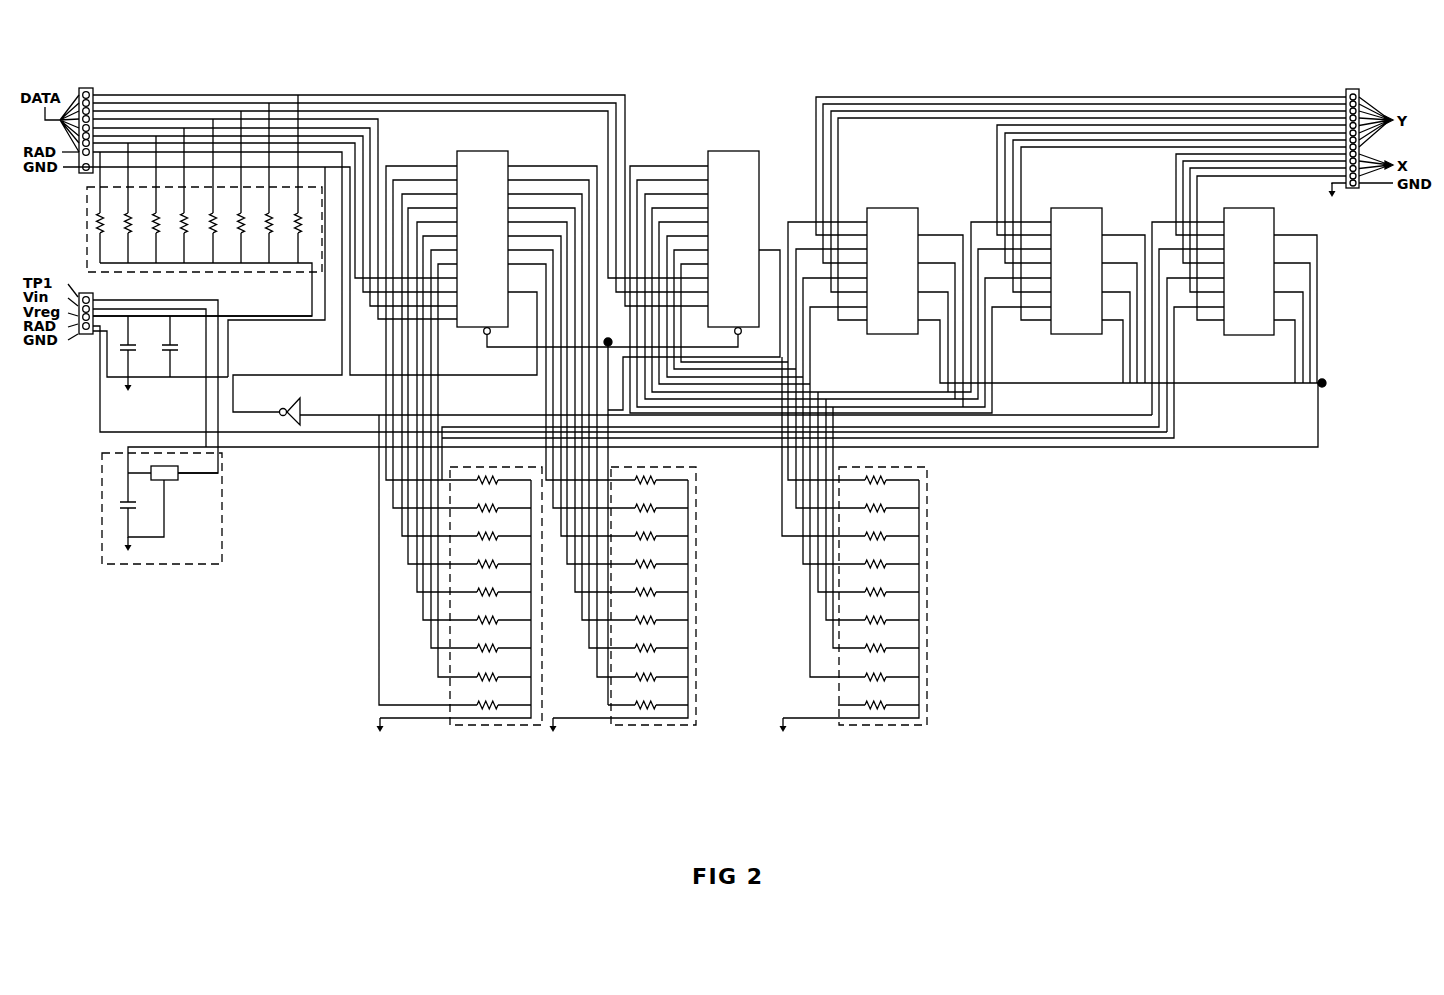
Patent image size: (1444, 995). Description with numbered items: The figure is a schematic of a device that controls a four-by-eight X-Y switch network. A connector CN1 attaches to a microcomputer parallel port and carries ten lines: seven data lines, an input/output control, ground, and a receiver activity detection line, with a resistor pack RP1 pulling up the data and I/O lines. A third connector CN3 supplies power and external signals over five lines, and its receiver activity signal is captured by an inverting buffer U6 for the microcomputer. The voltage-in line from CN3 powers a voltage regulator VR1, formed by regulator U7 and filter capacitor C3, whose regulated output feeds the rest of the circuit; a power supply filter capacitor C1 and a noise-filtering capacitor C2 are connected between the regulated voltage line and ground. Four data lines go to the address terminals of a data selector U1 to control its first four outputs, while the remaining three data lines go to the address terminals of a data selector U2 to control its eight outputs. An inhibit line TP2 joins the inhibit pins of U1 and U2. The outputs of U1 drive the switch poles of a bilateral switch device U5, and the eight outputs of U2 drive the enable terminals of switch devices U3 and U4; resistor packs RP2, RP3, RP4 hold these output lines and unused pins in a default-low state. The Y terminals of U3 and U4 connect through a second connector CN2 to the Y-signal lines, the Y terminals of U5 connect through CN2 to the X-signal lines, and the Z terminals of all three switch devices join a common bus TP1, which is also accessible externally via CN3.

The connector CN1 is at (85, 88).
The second connector CN2 is at (1352, 88).
The third connector CN3 is at (88, 345).
The resistor pack RP1 is at (85, 216).
The resistor pack RP2 is at (488, 727).
The resistor pack RP3 is at (645, 727).
The resistor pack RP4 is at (872, 728).
The data selector U1 is at (480, 147).
The data selector U2 is at (730, 147).
The switch device U3 is at (897, 201).
The switch device U4 is at (1079, 201).
The switch device U5 is at (1243, 204).
The buffer U6 is at (293, 424).
The voltage regulator U7 is at (175, 487).
The power supply filter capacitor C1 is at (146, 335).
The capacitor C2 is at (188, 335).
The filter capacitor C3 is at (118, 505).
The voltage regulator VR1 is at (130, 565).
The common bus TP1 is at (1342, 384).
The inhibit line TP2 is at (607, 336).